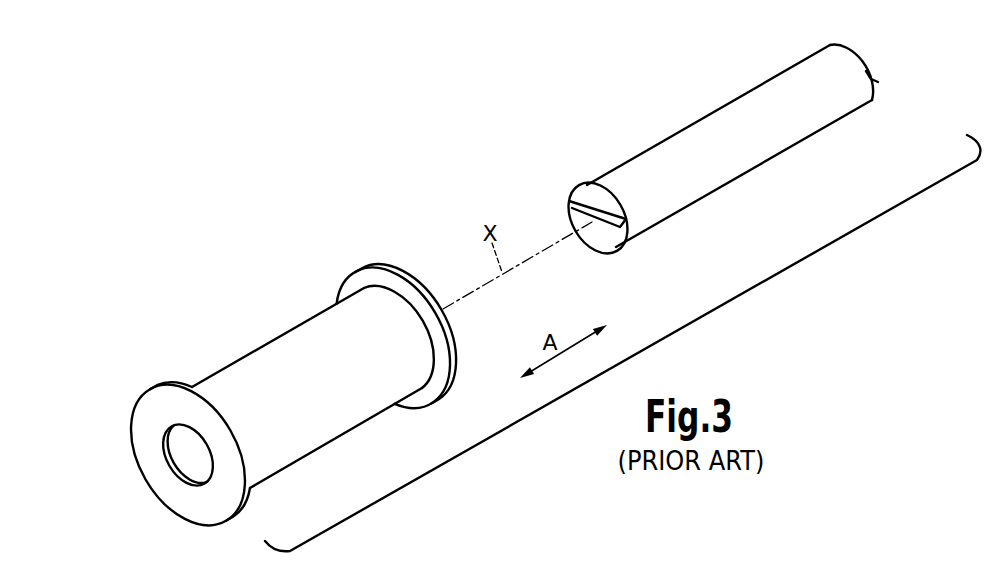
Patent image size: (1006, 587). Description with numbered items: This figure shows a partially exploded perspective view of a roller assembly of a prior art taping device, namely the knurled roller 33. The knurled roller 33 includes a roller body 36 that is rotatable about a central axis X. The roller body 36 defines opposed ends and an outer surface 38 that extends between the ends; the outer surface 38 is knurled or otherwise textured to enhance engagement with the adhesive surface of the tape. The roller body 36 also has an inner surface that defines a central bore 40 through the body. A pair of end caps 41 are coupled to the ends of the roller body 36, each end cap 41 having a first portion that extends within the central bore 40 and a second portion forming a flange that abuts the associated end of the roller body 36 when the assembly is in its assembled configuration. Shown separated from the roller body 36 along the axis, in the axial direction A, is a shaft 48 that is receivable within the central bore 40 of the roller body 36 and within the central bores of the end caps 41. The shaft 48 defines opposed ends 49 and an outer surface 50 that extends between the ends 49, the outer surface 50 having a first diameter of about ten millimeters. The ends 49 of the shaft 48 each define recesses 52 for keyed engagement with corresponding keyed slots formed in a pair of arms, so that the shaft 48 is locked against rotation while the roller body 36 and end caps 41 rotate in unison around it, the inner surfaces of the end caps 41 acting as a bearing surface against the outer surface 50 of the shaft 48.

The knurled roller 33 is at (678, 332).
The roller body 36 is at (267, 370).
The outer surface 38 is at (294, 360).
The central bore 40 is at (180, 474).
The end caps 41 is at (145, 415).
The shaft 48 is at (737, 170).
The ends 49 is at (600, 240).
The outer surface 50 is at (745, 126).
The recesses 52 is at (580, 203).